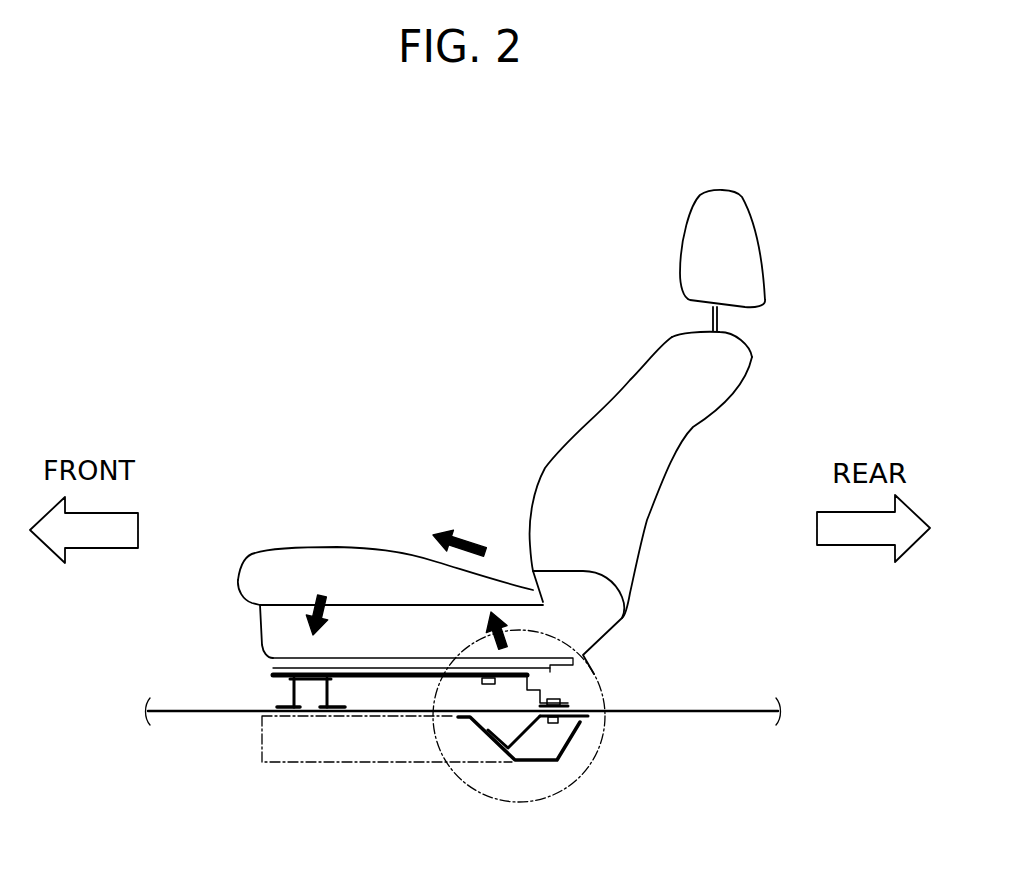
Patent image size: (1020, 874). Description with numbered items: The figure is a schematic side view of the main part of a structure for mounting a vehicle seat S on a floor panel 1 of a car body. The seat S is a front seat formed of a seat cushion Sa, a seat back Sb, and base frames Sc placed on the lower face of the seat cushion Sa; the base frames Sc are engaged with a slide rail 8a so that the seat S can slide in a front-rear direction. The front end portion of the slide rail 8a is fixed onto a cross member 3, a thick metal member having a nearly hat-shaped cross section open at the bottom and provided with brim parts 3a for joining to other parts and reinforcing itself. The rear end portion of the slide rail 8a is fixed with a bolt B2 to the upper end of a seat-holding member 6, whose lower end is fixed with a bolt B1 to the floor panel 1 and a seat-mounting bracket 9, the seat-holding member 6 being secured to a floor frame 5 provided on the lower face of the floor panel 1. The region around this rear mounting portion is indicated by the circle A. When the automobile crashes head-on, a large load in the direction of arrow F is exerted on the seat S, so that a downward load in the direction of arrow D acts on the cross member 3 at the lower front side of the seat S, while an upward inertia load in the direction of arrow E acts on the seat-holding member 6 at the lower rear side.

The seat S is at (763, 391).
The seat cushion Sa is at (293, 562).
The seat back Sb is at (605, 500).
The base frames Sc is at (273, 660).
The arrow D is at (315, 603).
The arrow E is at (487, 612).
The arrow F is at (459, 528).
The enlarged region of rear mounting portion A is at (598, 666).
The floor panel 1 is at (752, 710).
The cross member 3 is at (292, 692).
The brim parts 3a is at (285, 700).
The floor frame 5 is at (537, 762).
The seat-holding member 6 is at (533, 683).
The slide rail 8a is at (397, 670).
The seat-mounting bracket 9 is at (537, 720).
The bolt B1 is at (558, 702).
The bolt B2 is at (488, 686).